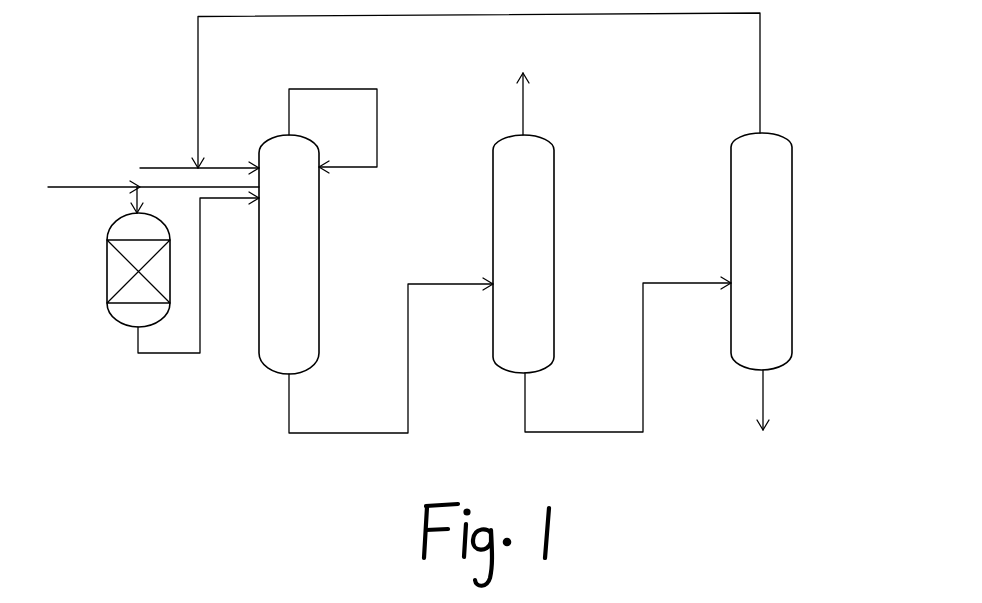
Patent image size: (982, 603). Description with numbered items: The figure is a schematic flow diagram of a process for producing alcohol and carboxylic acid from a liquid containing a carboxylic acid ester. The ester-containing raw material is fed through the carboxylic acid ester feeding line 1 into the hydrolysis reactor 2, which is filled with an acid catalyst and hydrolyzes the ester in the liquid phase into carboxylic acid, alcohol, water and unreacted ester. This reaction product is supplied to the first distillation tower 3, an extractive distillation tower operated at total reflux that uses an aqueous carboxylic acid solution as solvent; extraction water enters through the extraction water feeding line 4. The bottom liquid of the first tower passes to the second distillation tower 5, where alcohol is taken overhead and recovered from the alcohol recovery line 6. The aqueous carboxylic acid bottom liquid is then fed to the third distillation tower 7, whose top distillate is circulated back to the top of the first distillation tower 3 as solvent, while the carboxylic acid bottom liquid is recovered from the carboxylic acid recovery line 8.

The carboxylic acid ester feeding line 1 is at (73, 186).
The hydrolysis reactor 2 is at (123, 277).
The first distillation tower 3 is at (308, 224).
The extraction water feeding line 4 is at (152, 168).
The second distillation tower 5 is at (543, 223).
The alcohol recovery line 6 is at (522, 102).
The third distillation tower 7 is at (778, 220).
The carboxylic acid recovery line 8 is at (763, 397).